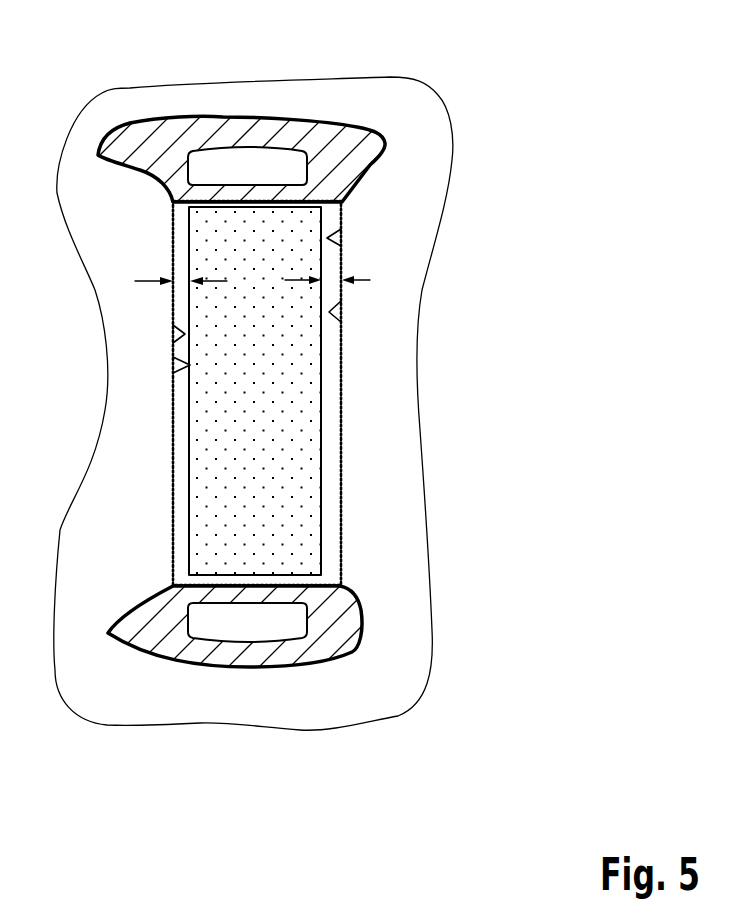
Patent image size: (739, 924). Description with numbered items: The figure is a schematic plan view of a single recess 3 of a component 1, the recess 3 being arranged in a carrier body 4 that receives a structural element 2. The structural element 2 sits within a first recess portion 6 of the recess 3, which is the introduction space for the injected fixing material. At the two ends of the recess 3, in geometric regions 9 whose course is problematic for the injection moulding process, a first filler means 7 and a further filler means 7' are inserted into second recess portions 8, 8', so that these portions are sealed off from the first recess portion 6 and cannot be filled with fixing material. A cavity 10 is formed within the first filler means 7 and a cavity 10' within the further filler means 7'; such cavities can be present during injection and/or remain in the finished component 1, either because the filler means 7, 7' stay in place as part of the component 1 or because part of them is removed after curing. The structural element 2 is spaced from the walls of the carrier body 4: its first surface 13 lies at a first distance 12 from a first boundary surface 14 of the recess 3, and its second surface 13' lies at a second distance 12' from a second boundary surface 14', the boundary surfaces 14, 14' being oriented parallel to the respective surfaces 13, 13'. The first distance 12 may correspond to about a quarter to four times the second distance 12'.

The component 1 is at (493, 78).
The structural element 2 is at (327, 355).
The recess 3 is at (97, 174).
The carrier body 4 is at (405, 112).
The first recess portion 6 is at (170, 477).
The first filler means 7 is at (250, 116).
The further filler means 7' is at (254, 644).
The second recess portion 8 is at (243, 72).
The second recess portion 8' is at (230, 703).
The geometric region 9 is at (352, 112).
The cavity 10 is at (247, 101).
The cavity 10' is at (247, 661).
The first distance 12 is at (131, 297).
The second distance 12' is at (400, 268).
The first surface 13 is at (113, 363).
The second surface 13' is at (421, 233).
The first boundary surface 14 is at (110, 332).
The second boundary surface 14' is at (422, 308).